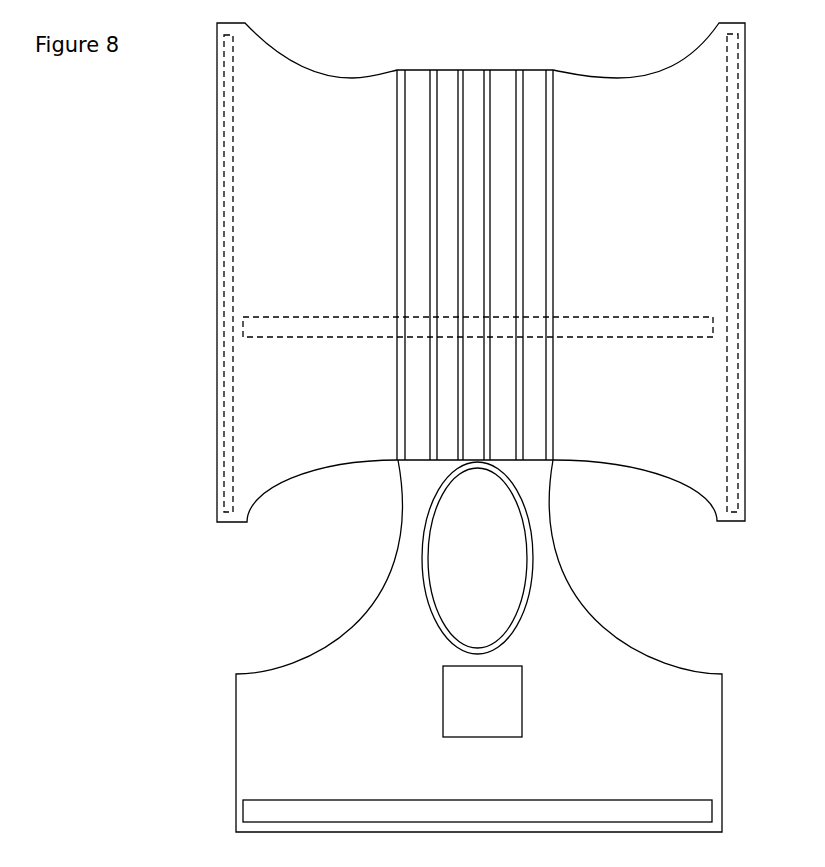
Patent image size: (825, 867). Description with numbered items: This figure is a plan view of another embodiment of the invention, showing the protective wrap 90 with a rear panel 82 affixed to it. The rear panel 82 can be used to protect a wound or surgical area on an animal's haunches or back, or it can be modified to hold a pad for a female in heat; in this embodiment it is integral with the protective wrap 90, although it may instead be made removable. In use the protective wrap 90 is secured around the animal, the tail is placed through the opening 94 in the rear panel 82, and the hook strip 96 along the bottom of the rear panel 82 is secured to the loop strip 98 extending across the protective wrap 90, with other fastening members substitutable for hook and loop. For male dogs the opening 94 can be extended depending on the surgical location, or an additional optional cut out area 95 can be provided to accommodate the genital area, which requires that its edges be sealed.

The protective wrap 90 is at (304, 72).
The loop strip 98 is at (267, 327).
The rear panel 82 is at (253, 718).
The optional cut out area 95 is at (477, 558).
The opening 94 is at (482, 701).
The hook strip 96 is at (703, 813).